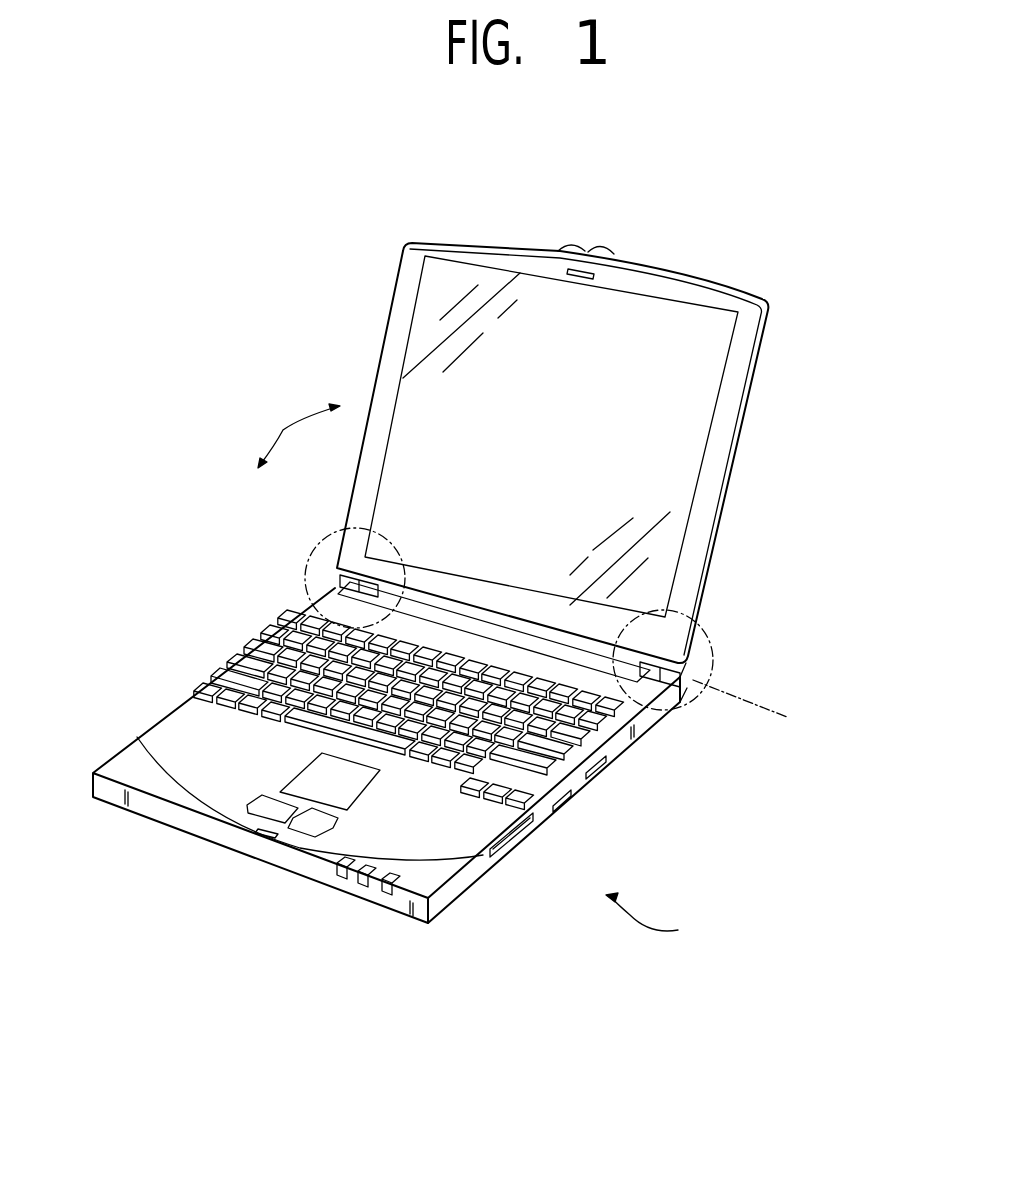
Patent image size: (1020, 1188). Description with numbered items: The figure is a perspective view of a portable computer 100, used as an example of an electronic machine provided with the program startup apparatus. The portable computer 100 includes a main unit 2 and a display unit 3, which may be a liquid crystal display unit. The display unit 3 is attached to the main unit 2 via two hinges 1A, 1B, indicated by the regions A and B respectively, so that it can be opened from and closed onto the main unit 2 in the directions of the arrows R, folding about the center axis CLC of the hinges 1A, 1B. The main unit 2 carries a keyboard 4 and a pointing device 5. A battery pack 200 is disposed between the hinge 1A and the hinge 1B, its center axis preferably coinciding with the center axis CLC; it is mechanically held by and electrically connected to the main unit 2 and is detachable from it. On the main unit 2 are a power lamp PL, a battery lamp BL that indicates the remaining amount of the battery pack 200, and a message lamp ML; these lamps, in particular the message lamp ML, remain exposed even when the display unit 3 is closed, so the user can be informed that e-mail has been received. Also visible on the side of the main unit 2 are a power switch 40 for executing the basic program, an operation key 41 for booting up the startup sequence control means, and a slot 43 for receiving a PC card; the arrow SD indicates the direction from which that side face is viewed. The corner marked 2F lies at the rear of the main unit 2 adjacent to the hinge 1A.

The portable computer 100 is at (633, 243).
The display unit 3 is at (678, 372).
The battery pack 200 is at (500, 637).
The main unit 2 is at (460, 830).
The pointing device 5 is at (298, 773).
The keyboard 4 is at (570, 757).
The power switch 40 is at (565, 800).
The operation key 41 is at (598, 758).
The slot 43 is at (513, 848).
The hinge 1A is at (678, 675).
The hinge 1B is at (340, 585).
The rear corner of main body 2F is at (683, 683).
The region A is at (713, 652).
The region B is at (312, 553).
The center axis CLC is at (767, 716).
The arrows R is at (283, 430).
The arrow SD is at (663, 920).
The message lamp ML is at (341, 880).
The battery lamp BL is at (363, 889).
The power lamp PL is at (388, 900).